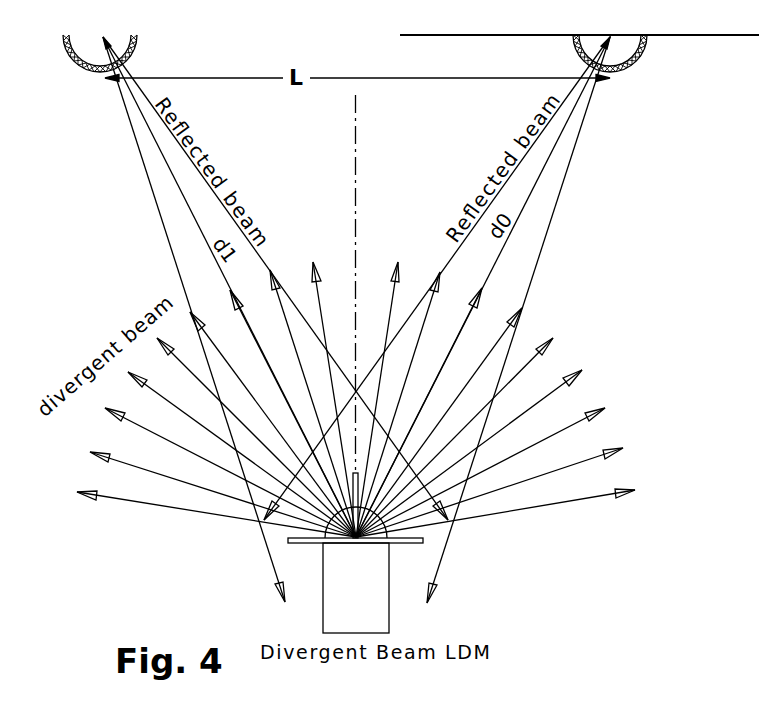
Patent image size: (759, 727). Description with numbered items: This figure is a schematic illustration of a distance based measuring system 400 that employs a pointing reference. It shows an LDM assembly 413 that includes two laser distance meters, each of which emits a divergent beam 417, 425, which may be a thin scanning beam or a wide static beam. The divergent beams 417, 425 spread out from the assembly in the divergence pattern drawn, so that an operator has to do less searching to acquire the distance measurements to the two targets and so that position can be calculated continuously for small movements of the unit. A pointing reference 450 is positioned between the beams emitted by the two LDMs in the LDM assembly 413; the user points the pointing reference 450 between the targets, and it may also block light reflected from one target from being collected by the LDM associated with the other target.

The divergent beam laser distance meter (LDM) 400 is at (328, 570).
The LDM assembly 413 is at (396, 617).
The divergent beam 417 is at (532, 432).
The divergent beam 425 is at (135, 443).
The pointing reference 450 is at (354, 473).